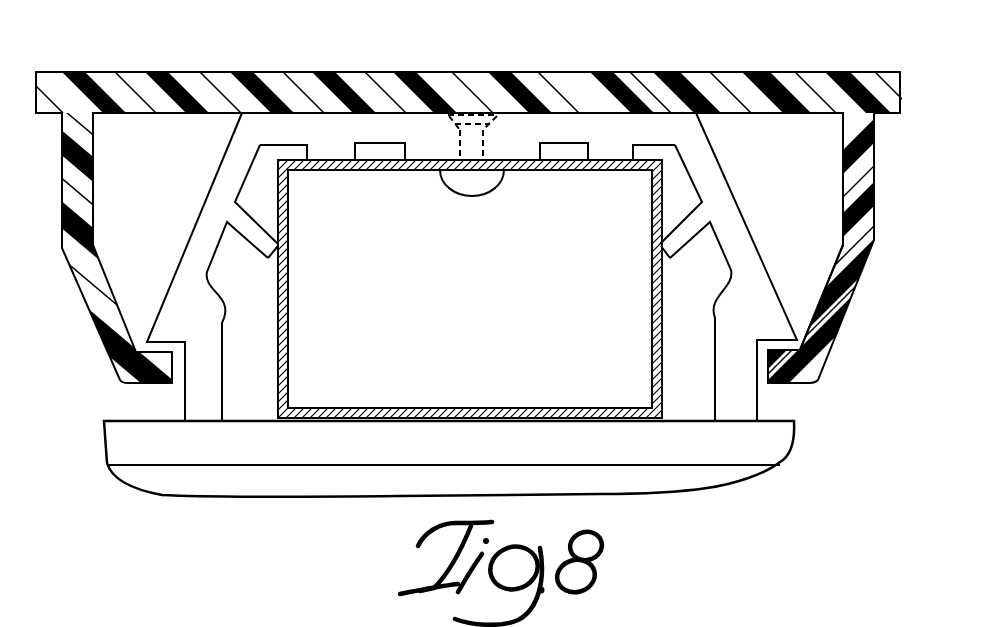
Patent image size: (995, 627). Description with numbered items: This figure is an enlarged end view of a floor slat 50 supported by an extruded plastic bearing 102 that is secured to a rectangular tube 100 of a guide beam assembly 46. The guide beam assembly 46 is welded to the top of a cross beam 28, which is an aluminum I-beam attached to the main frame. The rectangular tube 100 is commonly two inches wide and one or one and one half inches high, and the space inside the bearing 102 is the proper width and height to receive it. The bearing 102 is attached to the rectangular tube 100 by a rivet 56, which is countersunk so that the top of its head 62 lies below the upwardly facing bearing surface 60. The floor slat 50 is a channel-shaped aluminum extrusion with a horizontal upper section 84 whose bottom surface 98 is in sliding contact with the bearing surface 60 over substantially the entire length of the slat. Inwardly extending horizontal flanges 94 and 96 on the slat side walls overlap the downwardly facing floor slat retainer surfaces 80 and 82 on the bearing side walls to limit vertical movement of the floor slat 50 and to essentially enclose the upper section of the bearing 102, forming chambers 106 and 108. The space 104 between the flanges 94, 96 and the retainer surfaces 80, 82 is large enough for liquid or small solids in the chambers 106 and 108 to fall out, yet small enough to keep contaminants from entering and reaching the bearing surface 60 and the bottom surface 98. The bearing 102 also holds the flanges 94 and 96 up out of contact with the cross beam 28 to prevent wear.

The floor slat 50 is at (259, 72).
The horizontal upper section 84 is at (373, 82).
The head 62 is at (466, 112).
The upwardly facing bearing surface 60 is at (632, 112).
The chamber 108 is at (793, 128).
The bottom surface 98 is at (140, 114).
The bearing 102 is at (723, 180).
The rivet 56 is at (498, 180).
The rectangular tube 100 is at (655, 298).
The chamber 106 is at (137, 250).
The floor slat retainer surface 80 is at (177, 344).
The floor slat retainer surface 82 is at (762, 337).
The horizontal flange 94 is at (155, 383).
The horizontal flange 96 is at (774, 380).
The space 104 is at (788, 343).
The guide beam assembly 46 is at (277, 375).
The cross beam 28 is at (352, 478).